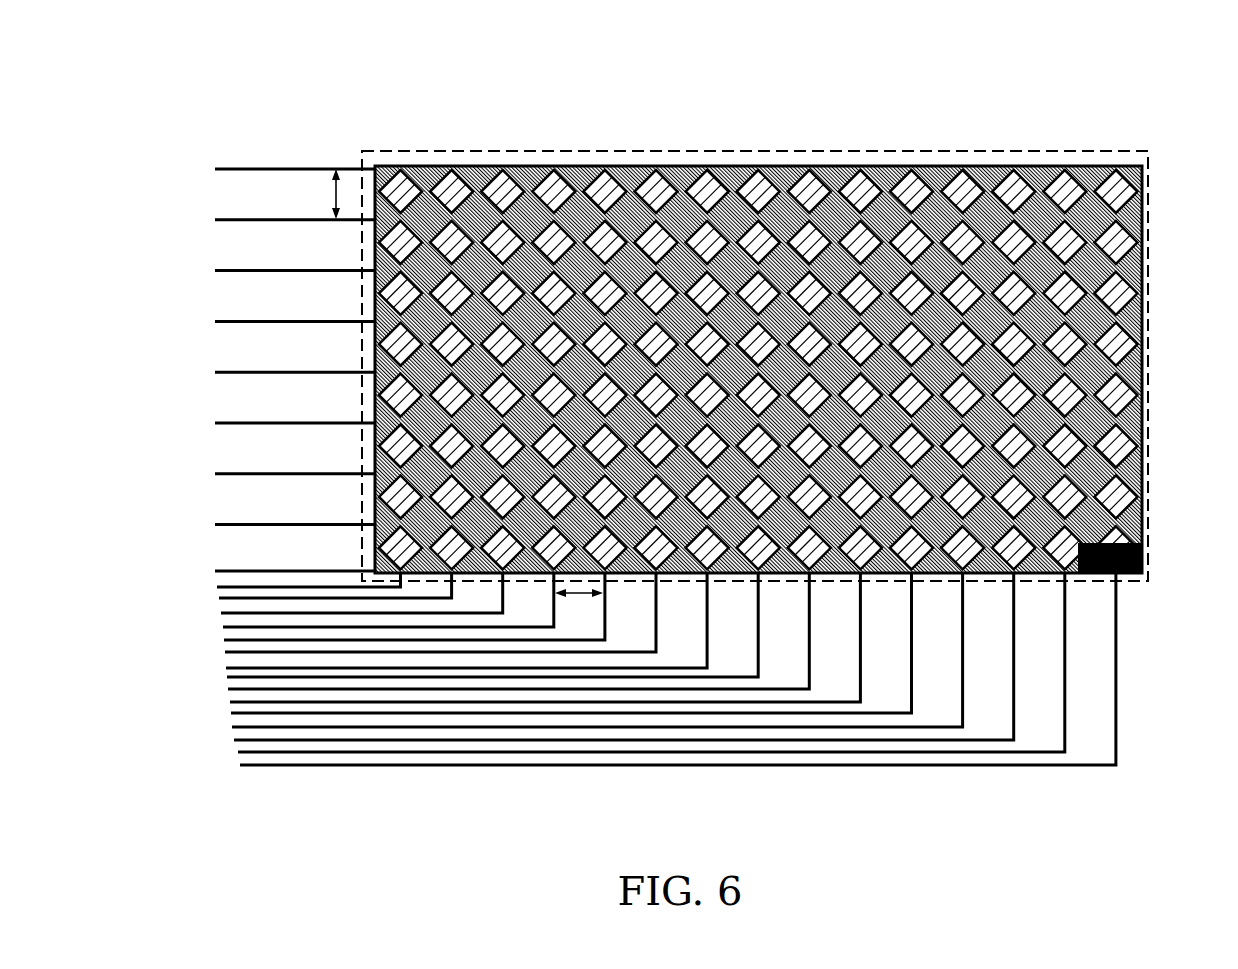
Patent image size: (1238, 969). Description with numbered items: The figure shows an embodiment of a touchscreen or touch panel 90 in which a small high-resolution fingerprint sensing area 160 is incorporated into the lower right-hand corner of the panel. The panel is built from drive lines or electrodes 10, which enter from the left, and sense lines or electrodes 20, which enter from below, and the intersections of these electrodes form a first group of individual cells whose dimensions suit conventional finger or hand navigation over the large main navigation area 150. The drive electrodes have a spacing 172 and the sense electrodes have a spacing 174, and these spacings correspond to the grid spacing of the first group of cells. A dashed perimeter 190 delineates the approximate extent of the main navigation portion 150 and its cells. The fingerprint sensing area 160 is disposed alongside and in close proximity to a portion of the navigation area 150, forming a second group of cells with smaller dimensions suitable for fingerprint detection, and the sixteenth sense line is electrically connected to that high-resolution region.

The touchscreen or touch panel 90 is at (978, 102).
The navigation area or region 150 is at (609, 216).
The fingerprint reading or sensing area 160 is at (1150, 582).
The spacing of drive lines or electrodes 172 is at (332, 196).
The spacing of sense lines or electrodes 174 is at (584, 599).
The perimeter 190 is at (1149, 223).
The drive lines or electrodes D1-D9 10 is at (202, 167).
The sense lines or electrodes S1-S16 20 is at (207, 567).